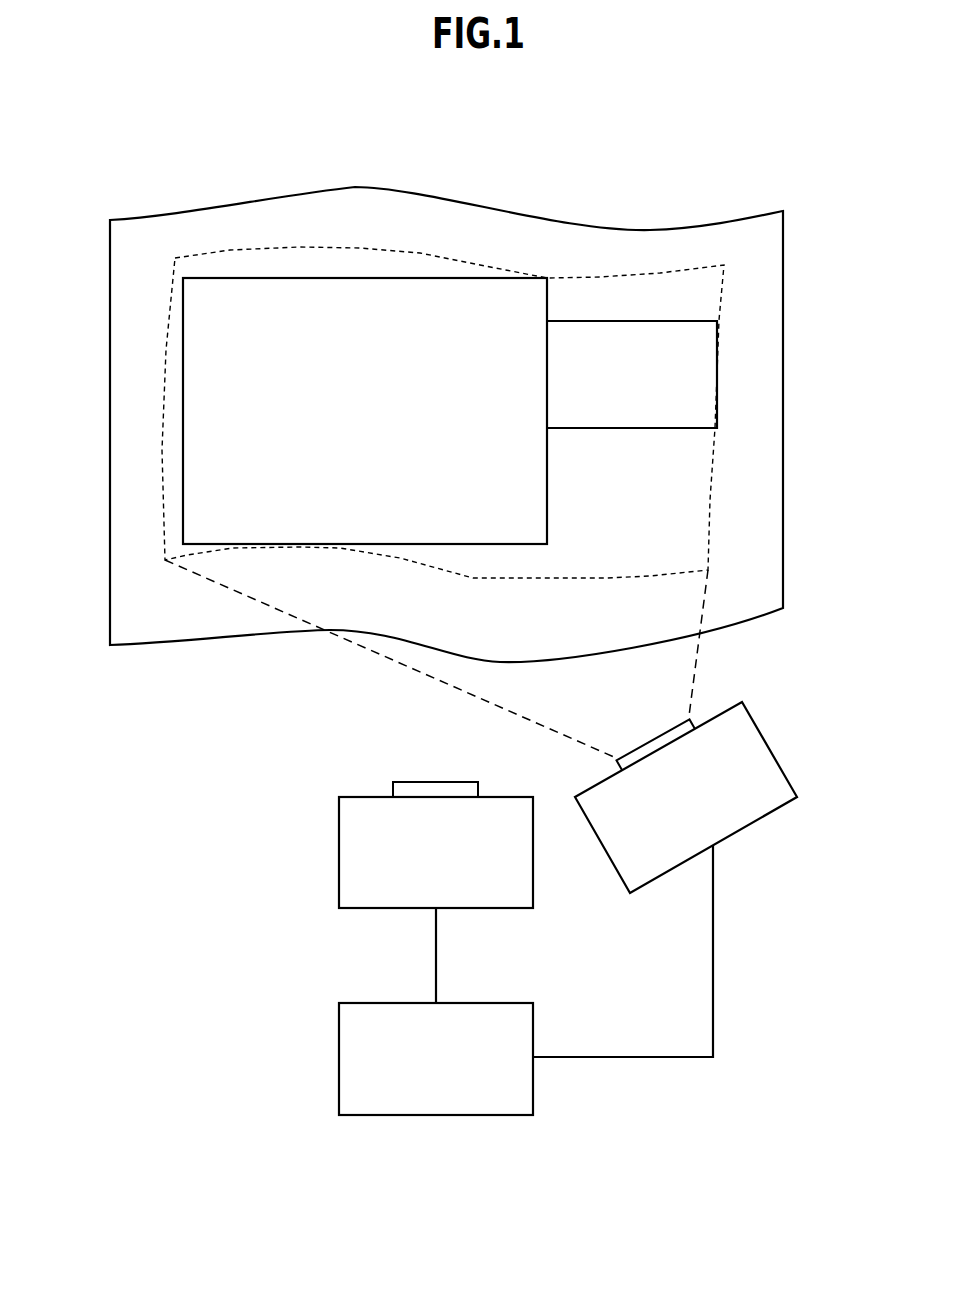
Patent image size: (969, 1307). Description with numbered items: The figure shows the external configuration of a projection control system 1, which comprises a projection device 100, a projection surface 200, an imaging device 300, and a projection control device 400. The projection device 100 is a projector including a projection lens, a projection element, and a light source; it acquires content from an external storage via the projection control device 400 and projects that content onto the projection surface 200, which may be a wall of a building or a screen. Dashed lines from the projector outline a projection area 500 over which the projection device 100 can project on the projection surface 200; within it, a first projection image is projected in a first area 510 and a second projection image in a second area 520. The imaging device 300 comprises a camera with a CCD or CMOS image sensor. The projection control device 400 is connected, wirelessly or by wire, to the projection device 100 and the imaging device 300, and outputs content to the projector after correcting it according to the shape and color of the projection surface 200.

The projection control system 1 is at (762, 124).
The projection device 100 is at (757, 720).
The projection surface 200 is at (253, 202).
The imaging device 300 is at (353, 796).
The projection control device 400 is at (352, 1002).
The projection area 500 is at (658, 272).
The first area 510 is at (340, 278).
The second area 520 is at (718, 350).